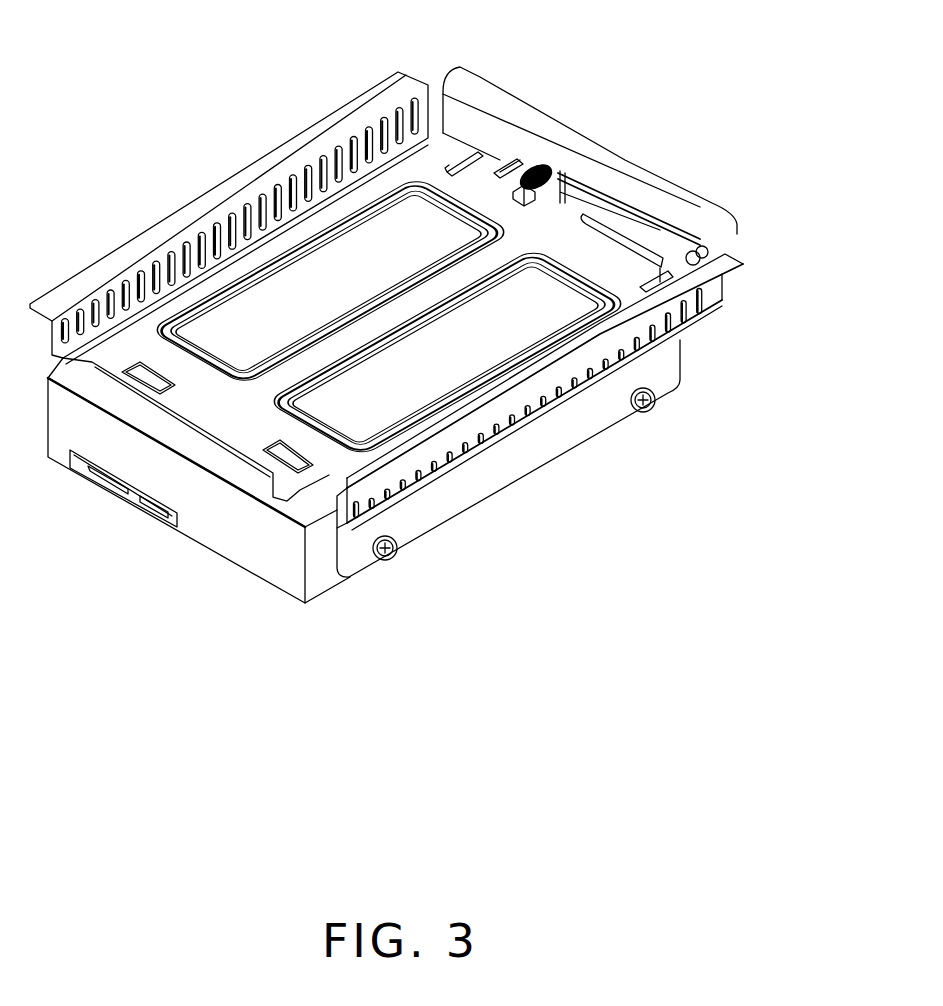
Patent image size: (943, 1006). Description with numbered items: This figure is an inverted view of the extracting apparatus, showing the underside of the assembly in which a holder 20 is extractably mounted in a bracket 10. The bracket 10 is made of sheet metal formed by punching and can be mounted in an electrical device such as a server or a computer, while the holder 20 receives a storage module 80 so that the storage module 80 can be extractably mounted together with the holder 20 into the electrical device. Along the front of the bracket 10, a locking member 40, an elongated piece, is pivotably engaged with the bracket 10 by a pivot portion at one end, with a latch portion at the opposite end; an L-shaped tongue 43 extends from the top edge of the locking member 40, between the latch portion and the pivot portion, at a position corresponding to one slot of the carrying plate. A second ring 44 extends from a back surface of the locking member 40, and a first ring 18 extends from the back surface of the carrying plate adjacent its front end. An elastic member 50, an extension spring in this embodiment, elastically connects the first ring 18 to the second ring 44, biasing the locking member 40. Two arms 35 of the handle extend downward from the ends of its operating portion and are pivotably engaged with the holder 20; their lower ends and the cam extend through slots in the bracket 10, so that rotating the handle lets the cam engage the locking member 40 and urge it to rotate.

The bracket 10 is at (307, 138).
The holder 20 is at (557, 440).
The storage module 80 is at (252, 548).
The L-shaped tongue 43 is at (685, 232).
The locking member 40 is at (615, 222).
The second ring 44 is at (564, 170).
The elastic member 50 is at (558, 178).
The first ring 18 is at (518, 178).
The arms 35 is at (447, 160).